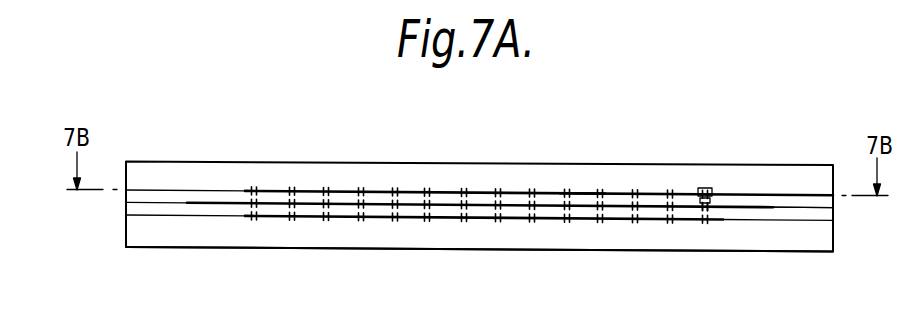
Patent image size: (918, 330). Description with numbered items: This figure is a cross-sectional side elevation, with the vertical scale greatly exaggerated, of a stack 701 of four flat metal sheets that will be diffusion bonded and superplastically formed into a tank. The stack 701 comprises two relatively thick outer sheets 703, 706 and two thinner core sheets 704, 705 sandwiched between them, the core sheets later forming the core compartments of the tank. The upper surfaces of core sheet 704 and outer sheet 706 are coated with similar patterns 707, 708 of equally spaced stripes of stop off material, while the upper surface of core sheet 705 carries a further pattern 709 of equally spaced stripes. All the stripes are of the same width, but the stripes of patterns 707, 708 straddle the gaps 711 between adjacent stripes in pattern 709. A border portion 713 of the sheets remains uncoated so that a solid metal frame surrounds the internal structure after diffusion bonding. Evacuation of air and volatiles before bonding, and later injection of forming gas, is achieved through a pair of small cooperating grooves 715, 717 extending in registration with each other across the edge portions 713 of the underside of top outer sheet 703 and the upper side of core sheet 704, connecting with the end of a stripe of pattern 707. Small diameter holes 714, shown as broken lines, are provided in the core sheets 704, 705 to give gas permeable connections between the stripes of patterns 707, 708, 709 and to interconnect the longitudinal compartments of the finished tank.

The stack 701 is at (160, 159).
The outer sheet 703 is at (208, 169).
The core sheet 704 is at (226, 196).
The core sheet 705 is at (202, 217).
The outer sheet 706 is at (270, 231).
The pattern of stop off stripes 707 is at (394, 198).
The pattern of stop off stripes 708 is at (395, 220).
The further pattern of stop off stripes 709 is at (517, 211).
The gaps 711 is at (476, 198).
The border portion 713 is at (806, 195).
The small diameter holes 714 is at (592, 194).
The groove 715 is at (700, 187).
The groove 717 is at (708, 207).